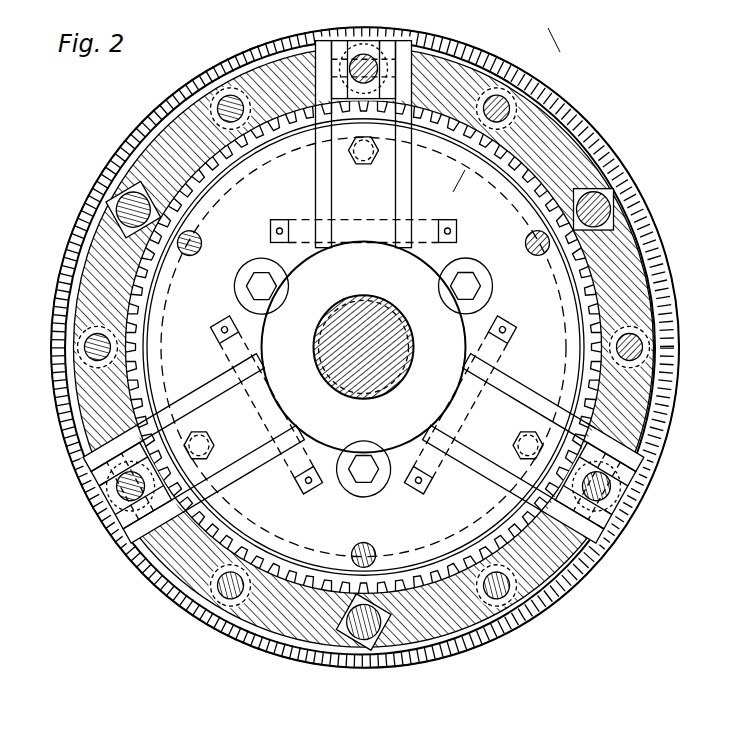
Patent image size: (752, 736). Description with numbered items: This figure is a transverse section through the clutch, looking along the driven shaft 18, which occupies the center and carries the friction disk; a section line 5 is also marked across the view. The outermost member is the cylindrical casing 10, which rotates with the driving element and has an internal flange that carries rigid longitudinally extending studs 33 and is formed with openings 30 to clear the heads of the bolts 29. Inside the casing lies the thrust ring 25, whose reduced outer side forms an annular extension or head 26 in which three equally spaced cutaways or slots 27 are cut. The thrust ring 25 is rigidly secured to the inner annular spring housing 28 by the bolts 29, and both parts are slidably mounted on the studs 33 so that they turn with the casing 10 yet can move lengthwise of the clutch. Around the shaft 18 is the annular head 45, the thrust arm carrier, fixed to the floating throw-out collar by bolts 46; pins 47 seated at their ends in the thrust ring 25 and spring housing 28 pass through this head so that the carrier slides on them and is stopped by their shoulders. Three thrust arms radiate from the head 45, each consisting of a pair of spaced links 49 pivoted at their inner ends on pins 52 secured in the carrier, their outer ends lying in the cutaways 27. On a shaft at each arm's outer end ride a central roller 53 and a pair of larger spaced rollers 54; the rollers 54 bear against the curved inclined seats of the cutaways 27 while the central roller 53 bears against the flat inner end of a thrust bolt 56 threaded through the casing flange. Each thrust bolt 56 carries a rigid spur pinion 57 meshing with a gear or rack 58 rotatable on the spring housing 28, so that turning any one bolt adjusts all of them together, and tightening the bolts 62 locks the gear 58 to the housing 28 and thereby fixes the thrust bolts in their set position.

The section line 5- 5 is at (497, 106).
The cylindrical casing 10 is at (52, 400).
The driven shaft 18 is at (362, 300).
The thrust ring 25 is at (627, 257).
The annular extension or head 26 is at (163, 147).
The cutaways or slots 27 is at (306, 62).
The spring housing 28 is at (218, 268).
The bolts 29 is at (203, 100).
The openings 30 is at (565, 110).
The studs 33 is at (125, 205).
The annular head 45 is at (363, 346).
The bolts 46 is at (478, 287).
The pins 47 is at (197, 232).
The links 49 is at (318, 172).
The pins 52 is at (455, 233).
The central roller 53 is at (360, 50).
The spaced rollers 54 is at (343, 45).
The thrust bolts 56 is at (386, 42).
The spur pinion 57 is at (627, 522).
The gear or rack 58 is at (502, 517).
The bolts 62 is at (366, 168).